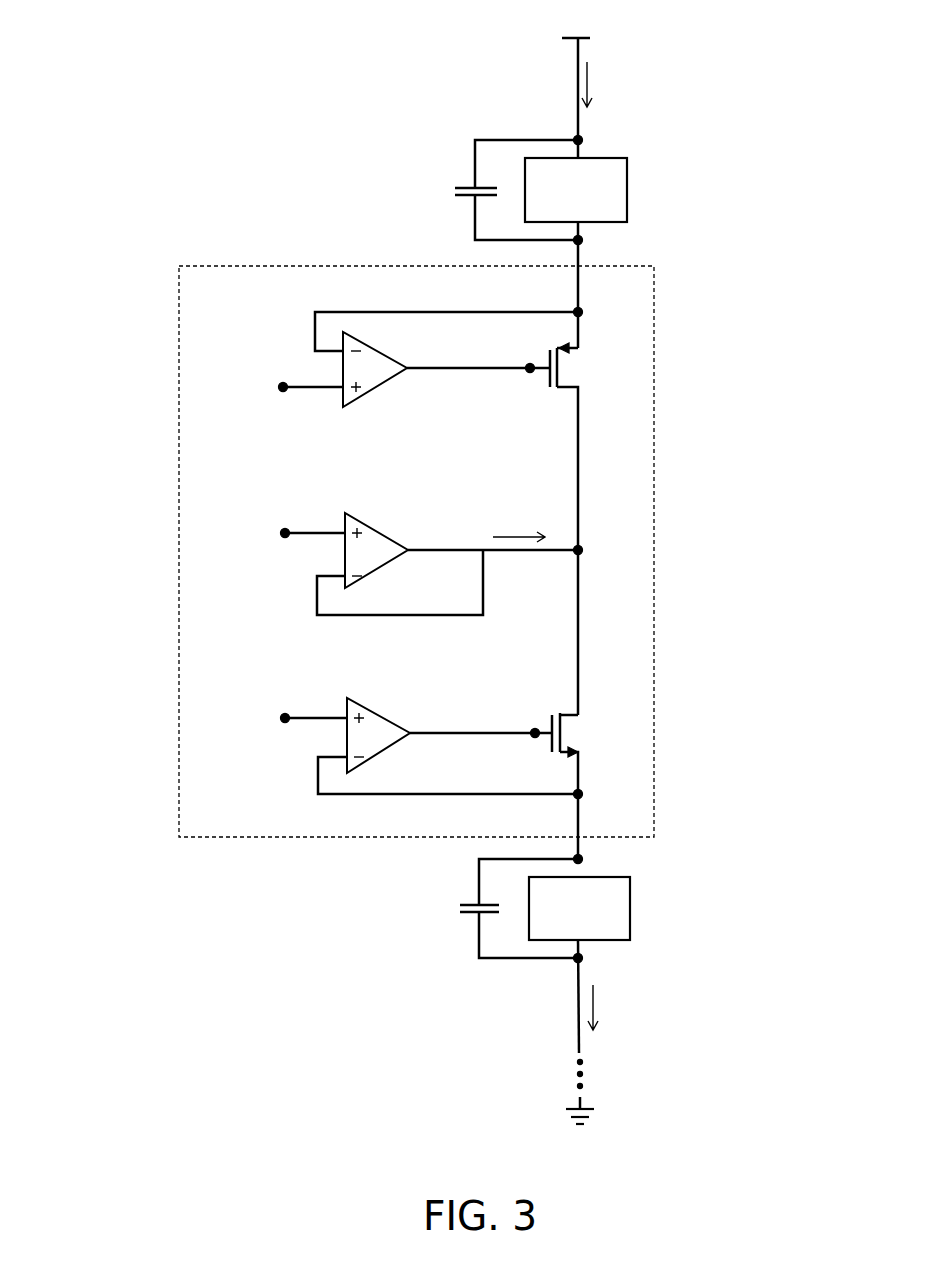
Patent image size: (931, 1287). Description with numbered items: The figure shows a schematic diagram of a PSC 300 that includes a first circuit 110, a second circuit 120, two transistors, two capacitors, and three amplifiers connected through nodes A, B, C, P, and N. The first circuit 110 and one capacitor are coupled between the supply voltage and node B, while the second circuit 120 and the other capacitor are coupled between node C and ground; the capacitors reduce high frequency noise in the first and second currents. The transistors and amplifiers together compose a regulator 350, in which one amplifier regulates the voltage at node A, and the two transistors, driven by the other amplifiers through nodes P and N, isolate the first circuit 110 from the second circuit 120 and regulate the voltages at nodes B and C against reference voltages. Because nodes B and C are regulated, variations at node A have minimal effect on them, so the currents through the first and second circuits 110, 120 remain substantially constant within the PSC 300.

The PSC 300 is at (205, 76).
The first circuit 110 is at (627, 185).
The second circuit 120 is at (630, 900).
The regulator 350 is at (654, 810).